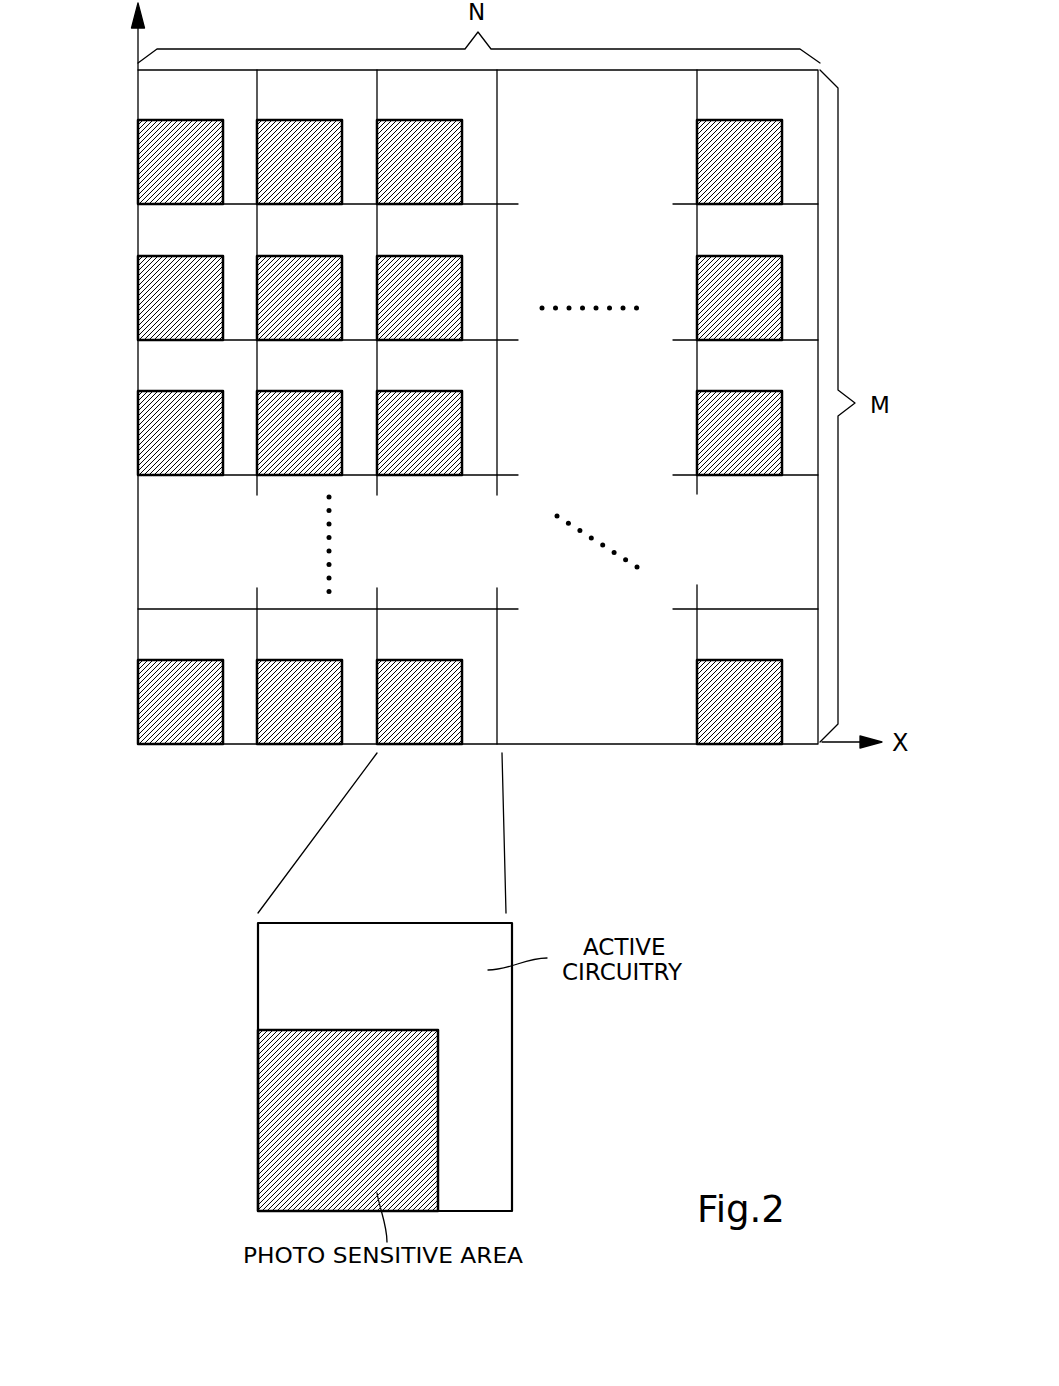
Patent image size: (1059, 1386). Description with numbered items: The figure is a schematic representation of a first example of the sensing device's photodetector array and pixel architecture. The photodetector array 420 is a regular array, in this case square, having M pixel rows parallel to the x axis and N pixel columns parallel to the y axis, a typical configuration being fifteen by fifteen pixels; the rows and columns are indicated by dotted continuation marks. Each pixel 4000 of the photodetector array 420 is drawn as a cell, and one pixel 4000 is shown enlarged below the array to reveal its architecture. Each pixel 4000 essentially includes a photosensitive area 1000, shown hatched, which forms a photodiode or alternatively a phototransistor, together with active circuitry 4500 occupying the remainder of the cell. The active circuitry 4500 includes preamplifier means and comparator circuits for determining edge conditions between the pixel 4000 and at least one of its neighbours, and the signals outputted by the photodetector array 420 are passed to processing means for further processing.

The photodetector array 420 is at (844, 52).
The photosensitive area 1000 is at (165, 292).
The pixel 4000 is at (517, 398).
The active circuitry 4500 is at (480, 237).